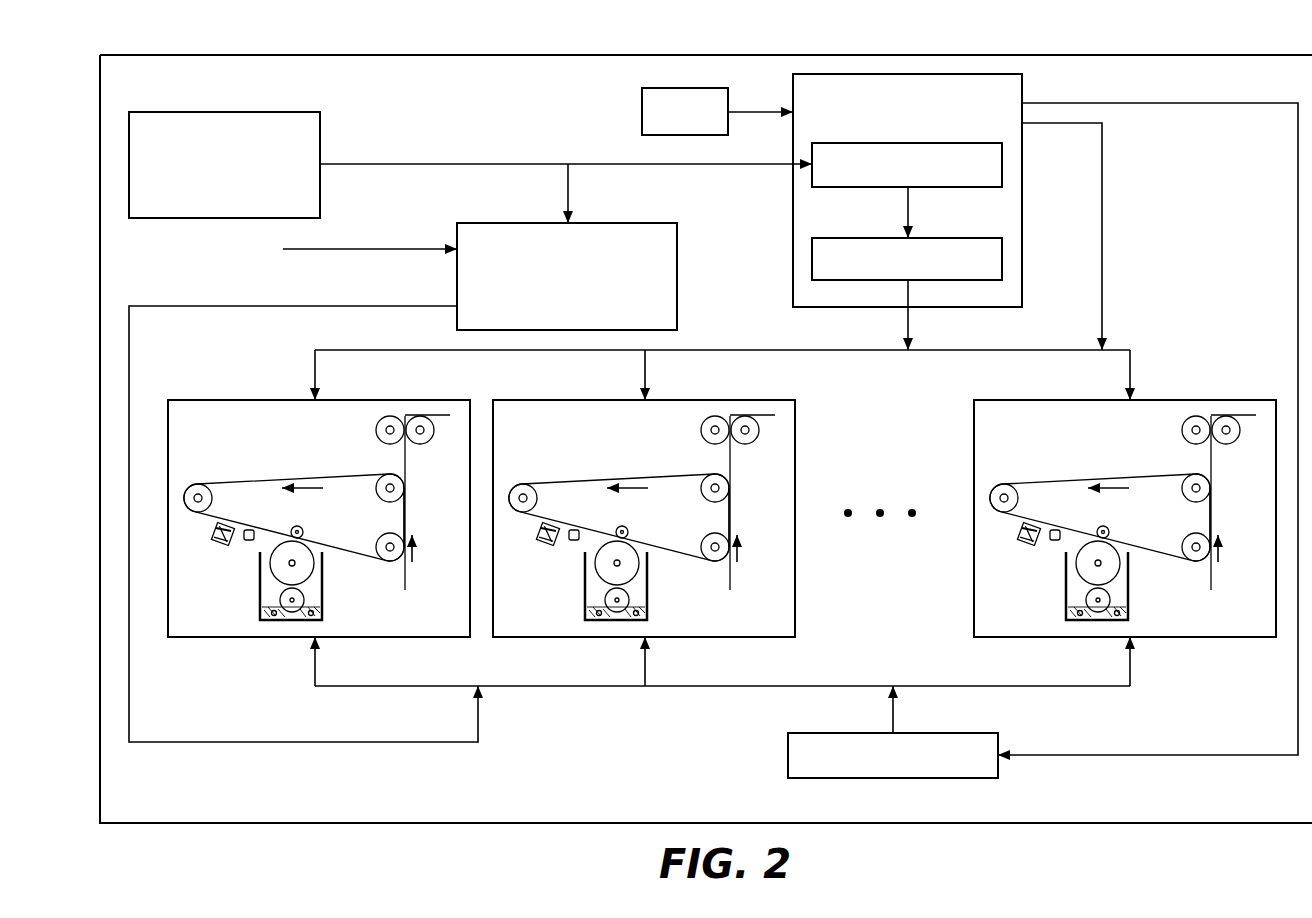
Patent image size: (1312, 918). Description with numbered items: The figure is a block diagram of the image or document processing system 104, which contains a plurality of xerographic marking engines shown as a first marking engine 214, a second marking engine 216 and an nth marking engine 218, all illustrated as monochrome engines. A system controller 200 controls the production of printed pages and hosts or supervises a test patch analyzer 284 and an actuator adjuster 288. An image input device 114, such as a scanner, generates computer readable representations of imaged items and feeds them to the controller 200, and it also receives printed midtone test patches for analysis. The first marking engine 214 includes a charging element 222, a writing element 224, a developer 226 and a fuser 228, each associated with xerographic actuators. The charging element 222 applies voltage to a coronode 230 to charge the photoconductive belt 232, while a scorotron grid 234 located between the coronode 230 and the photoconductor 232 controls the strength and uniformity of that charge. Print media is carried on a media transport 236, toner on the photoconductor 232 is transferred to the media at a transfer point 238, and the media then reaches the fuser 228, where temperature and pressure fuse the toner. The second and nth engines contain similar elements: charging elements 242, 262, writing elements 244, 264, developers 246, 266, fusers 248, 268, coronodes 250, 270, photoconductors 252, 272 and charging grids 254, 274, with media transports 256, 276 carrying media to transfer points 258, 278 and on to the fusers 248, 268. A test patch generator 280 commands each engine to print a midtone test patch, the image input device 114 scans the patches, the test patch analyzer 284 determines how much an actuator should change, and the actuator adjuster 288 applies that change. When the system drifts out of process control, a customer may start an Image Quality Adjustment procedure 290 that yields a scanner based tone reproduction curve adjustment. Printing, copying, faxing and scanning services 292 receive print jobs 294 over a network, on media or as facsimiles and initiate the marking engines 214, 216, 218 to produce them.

The image or document processing system 104 is at (205, 38).
The image input device 114 is at (166, 220).
The system controller 200 is at (900, 190).
The first xerographic marking engine 214 is at (262, 398).
The second xerographic marking engine 216 is at (643, 500).
The nth xerographic marking engine 218 is at (1124, 500).
The charging element 222 is at (222, 547).
The writing element 224 is at (250, 545).
The developer 226 is at (260, 616).
The fuser 228 is at (405, 416).
The coronode 230 is at (219, 541).
The photoconductive belt 232 is at (250, 482).
The scorotron grid 234 is at (215, 534).
The media transport 236 is at (407, 577).
The transfer point 238 is at (408, 522).
The charging element 242 is at (535, 567).
The writing element 244 is at (586, 559).
The developer 246 is at (593, 587).
The fuser 248 is at (738, 403).
The coronode 250 is at (522, 564).
The photoconductor 252 is at (619, 495).
The charging grid 254 is at (524, 533).
The media transport 256 is at (748, 522).
The transfer point 258 is at (760, 509).
The charging element 262 is at (1016, 567).
The writing element 264 is at (1067, 559).
The developer 266 is at (1074, 587).
The fuser 268 is at (1219, 403).
The coronode 270 is at (1003, 564).
The photoconductor 272 is at (1100, 495).
The charging grid 274 is at (1005, 533).
The media transport 276 is at (1229, 522).
The transfer point 278 is at (1241, 509).
The test patch generator 280 is at (788, 755).
The test patch analyzer 284 is at (1003, 169).
The actuator adjuster 288 is at (1003, 262).
The Image Quality Adjustment procedure 290 is at (642, 110).
The printing, copying, faxing, scanning services 292 is at (500, 222).
The print jobs 294 is at (325, 252).